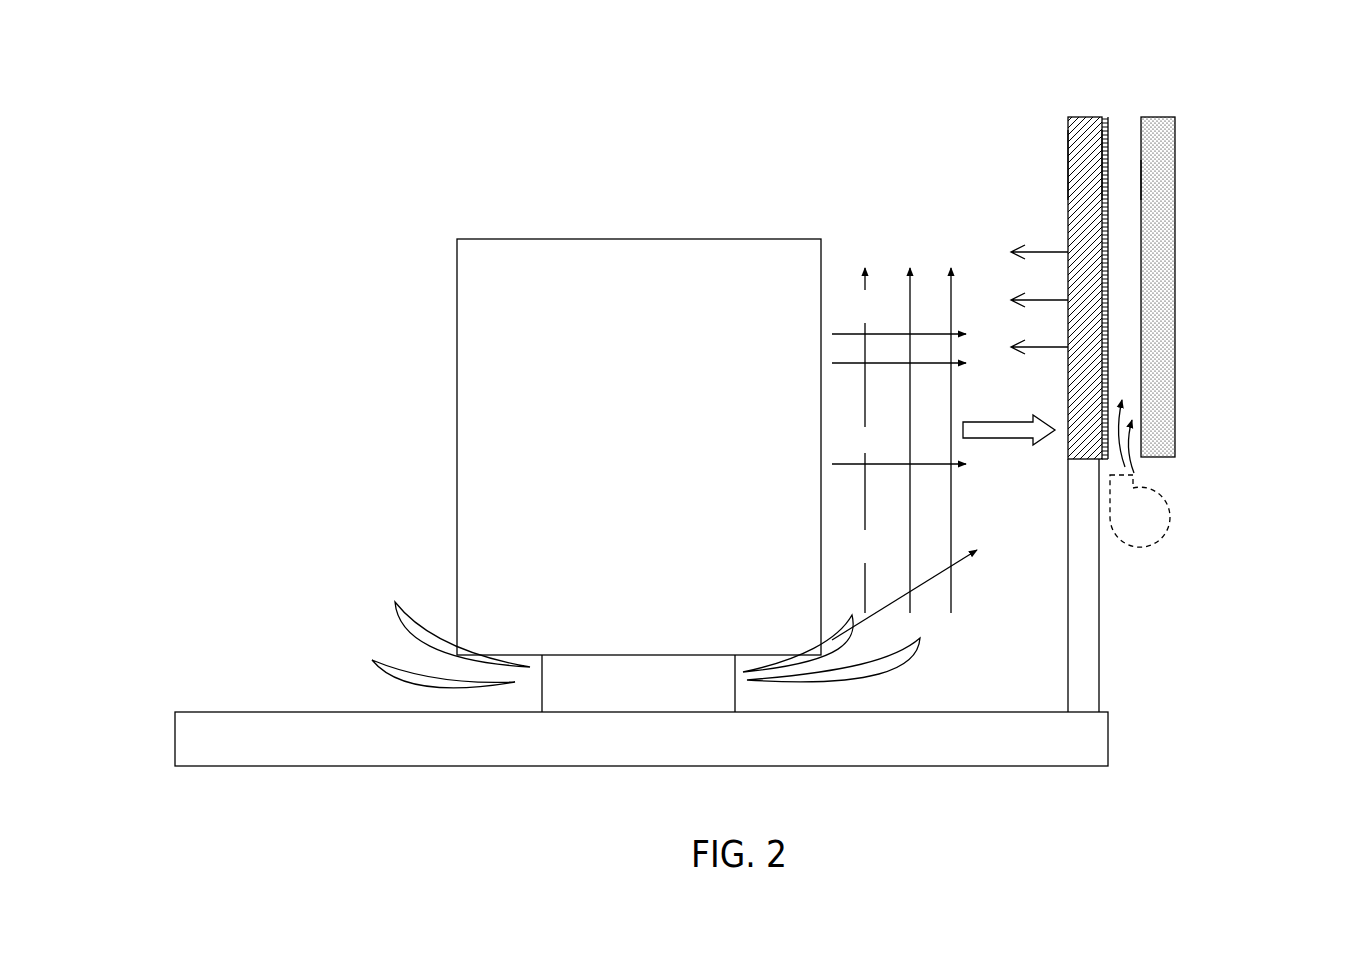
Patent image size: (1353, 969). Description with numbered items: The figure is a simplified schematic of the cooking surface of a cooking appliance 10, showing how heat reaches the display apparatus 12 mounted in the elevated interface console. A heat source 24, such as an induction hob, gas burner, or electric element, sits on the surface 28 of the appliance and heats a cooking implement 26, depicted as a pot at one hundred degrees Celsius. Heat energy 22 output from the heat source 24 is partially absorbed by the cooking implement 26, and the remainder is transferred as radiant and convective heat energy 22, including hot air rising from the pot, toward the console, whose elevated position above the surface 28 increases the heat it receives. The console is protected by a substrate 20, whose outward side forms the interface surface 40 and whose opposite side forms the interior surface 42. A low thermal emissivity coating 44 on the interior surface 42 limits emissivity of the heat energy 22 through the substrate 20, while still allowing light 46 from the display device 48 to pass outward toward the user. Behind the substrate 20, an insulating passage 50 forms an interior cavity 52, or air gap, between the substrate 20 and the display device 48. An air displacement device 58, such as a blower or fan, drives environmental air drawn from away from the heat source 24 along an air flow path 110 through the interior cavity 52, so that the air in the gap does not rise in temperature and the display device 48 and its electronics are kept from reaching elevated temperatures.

The cooking appliance 10 is at (375, 114).
The display apparatus 12 is at (1265, 82).
The substrate 20 is at (1078, 115).
The heat energy 22 is at (858, 174).
The heat source 24 is at (577, 700).
The cooking implement 26 is at (512, 239).
The surface 28 is at (207, 710).
The interface surface 40 is at (1068, 133).
The interior surface 42 is at (1106, 158).
The low thermal emissivity coating 44 is at (1105, 112).
The light 46 is at (1019, 229).
The display device 48 is at (1160, 115).
The insulating passage 50 is at (1143, 190).
The interior cavity 52 is at (1129, 113).
The air displacement device 58 is at (1168, 511).
The air flow path 110 is at (1147, 439).